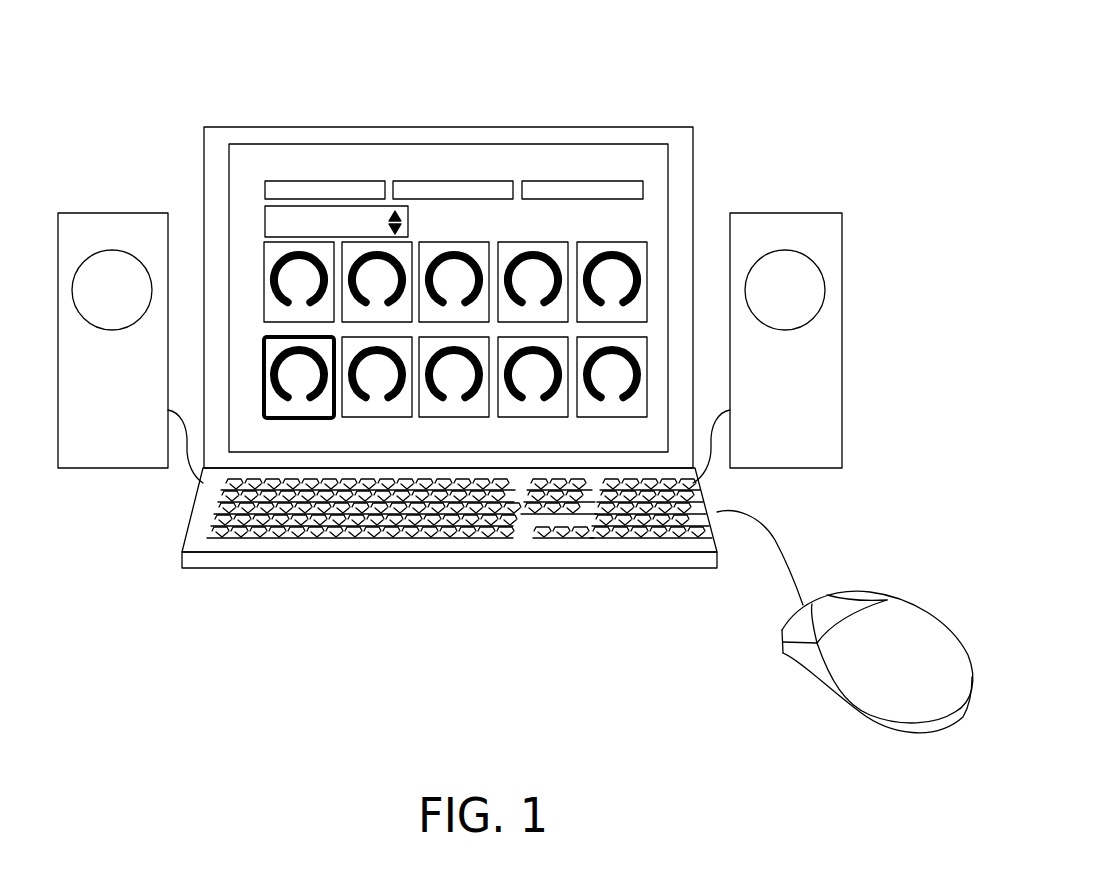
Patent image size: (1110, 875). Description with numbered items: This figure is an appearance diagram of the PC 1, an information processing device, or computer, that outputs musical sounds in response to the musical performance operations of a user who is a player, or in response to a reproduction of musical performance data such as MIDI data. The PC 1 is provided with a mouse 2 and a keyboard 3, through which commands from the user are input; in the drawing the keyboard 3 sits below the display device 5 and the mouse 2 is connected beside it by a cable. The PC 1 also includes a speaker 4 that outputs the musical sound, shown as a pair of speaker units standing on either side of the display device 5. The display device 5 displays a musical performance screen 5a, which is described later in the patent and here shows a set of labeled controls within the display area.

The PC 1 is at (715, 78).
The mouse 2 is at (906, 622).
The keyboard 3 is at (432, 513).
The speaker 4 is at (115, 230).
The display device 5 is at (383, 140).
The musical performance screen 5a is at (563, 162).